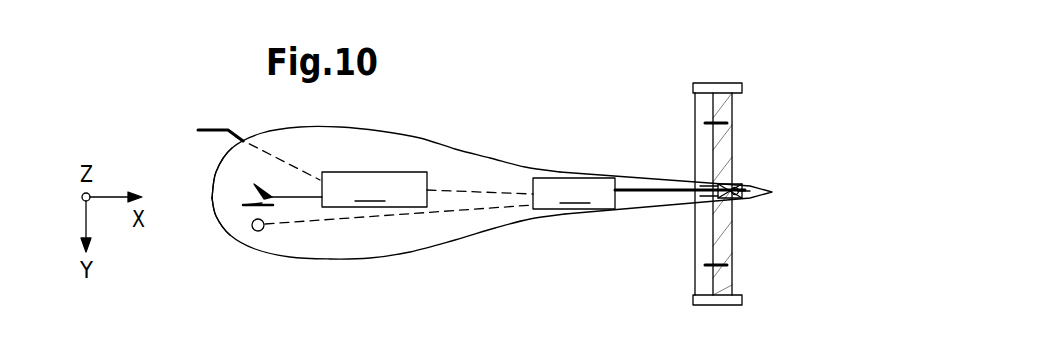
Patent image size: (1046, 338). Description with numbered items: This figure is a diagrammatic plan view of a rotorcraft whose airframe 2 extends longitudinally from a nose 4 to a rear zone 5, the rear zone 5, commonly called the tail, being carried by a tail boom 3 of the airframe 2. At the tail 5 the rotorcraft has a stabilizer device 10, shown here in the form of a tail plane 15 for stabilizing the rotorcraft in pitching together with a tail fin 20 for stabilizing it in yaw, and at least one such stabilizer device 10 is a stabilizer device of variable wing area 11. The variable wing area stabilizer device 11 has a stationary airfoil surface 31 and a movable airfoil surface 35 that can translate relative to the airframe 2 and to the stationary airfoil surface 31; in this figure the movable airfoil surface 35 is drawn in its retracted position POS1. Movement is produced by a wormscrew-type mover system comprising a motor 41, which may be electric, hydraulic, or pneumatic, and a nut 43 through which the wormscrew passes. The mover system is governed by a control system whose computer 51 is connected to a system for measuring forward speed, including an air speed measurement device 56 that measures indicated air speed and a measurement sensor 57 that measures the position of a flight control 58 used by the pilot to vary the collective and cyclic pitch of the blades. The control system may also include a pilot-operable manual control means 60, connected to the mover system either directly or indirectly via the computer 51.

The airframe 2 is at (452, 145).
The tail boom 3 is at (543, 222).
The nose 4 is at (212, 192).
The rear zone 5 is at (677, 220).
The stabilizer device 10 is at (756, 168).
The stabilizer device of variable wing area 11 is at (756, 168).
The tail plane 15 is at (693, 103).
The tail fin 20 is at (775, 192).
The stationary airfoil surface 31 is at (700, 163).
The movable airfoil surface 35 is at (801, 166).
The retracted position POS1 is at (722, 100).
The motor 41 is at (574, 192).
The nut 43 is at (722, 178).
The computer 51 is at (374, 189).
The air speed measurement device 56 is at (212, 130).
The measurement sensor 57 is at (285, 196).
The flight control 58 is at (256, 202).
The manual control means 60 is at (256, 233).